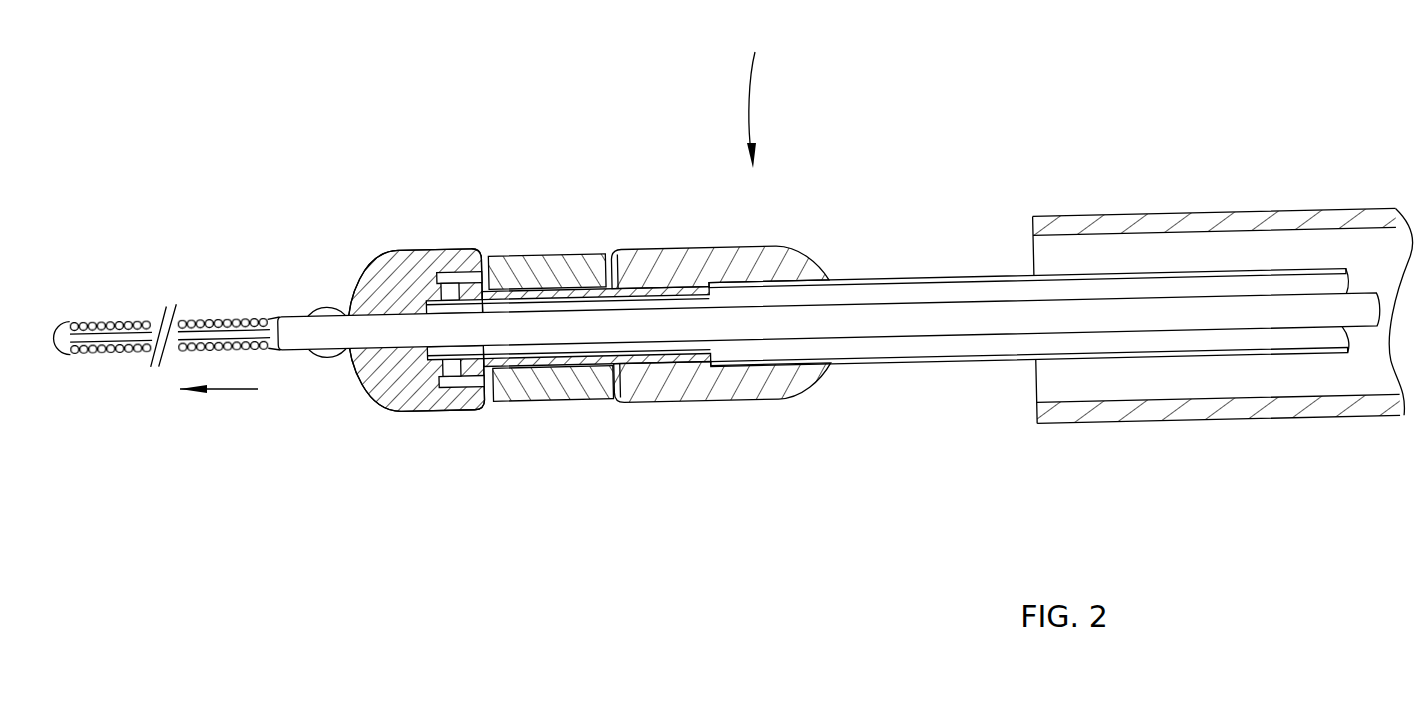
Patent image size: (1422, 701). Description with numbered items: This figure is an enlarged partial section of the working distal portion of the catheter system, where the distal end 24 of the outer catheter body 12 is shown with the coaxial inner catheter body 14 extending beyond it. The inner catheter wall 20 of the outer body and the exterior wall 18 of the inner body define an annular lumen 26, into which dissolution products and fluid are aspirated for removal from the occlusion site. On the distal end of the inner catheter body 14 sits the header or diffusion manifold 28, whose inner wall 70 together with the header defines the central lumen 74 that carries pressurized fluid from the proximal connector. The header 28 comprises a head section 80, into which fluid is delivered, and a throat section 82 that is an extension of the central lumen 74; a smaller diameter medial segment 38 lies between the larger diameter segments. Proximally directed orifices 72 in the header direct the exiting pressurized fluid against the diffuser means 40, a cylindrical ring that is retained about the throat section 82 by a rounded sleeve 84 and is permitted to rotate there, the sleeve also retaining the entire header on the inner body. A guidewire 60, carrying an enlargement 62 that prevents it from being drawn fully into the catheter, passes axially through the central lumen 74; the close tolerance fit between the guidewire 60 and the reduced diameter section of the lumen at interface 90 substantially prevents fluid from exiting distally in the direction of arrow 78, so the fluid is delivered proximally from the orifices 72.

The outer catheter body 12 is at (1255, 208).
The inner catheter body 14 is at (912, 363).
The outer wall of inner catheter body 18 is at (965, 365).
The inner catheter wall 20 is at (1057, 240).
The distal end 24 is at (781, 94).
The annular lumen 26 is at (1073, 383).
The diffusion manifold 28 is at (405, 410).
The medial segment 38 is at (537, 257).
The diffuser means 40 is at (537, 390).
The guidewire 60 is at (288, 318).
The enlargement 62 is at (327, 362).
The inner wall 70 is at (890, 285).
The proximally directed orifices 72 is at (498, 258).
The central lumen 74 is at (452, 274).
The arrow 78 is at (228, 389).
The head section 80 is at (395, 278).
The throat section 82 is at (632, 285).
The rounded sleeve 84 is at (743, 260).
The interface 90 is at (370, 317).